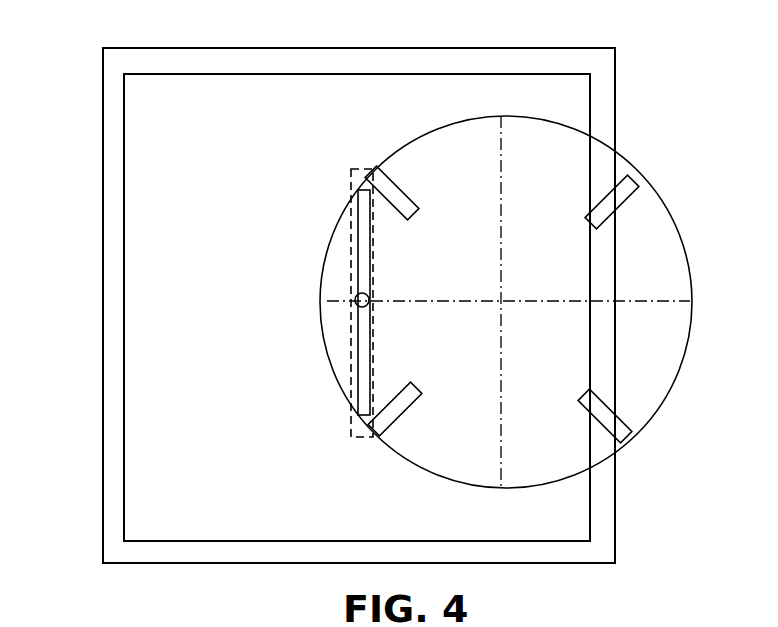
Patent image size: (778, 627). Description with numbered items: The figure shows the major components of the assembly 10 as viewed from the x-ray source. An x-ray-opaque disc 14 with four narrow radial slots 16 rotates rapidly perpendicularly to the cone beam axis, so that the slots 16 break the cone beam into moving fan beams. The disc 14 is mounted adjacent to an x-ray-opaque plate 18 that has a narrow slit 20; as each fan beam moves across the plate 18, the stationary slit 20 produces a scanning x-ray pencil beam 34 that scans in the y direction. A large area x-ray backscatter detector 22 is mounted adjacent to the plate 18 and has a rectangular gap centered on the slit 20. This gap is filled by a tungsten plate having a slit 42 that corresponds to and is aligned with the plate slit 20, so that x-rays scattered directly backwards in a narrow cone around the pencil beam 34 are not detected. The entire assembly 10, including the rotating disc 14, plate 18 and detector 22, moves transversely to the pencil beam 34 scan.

The assembly 10 is at (73, 91).
The x-ray-opaque disc 14 is at (682, 238).
The radial slots 16 is at (405, 195).
The x-ray-opaque plate 18 is at (537, 75).
The slit 20 is at (365, 342).
The x-ray backscatter detector 22 is at (615, 87).
The pencil beam 34 is at (358, 303).
The slit 42 is at (348, 182).